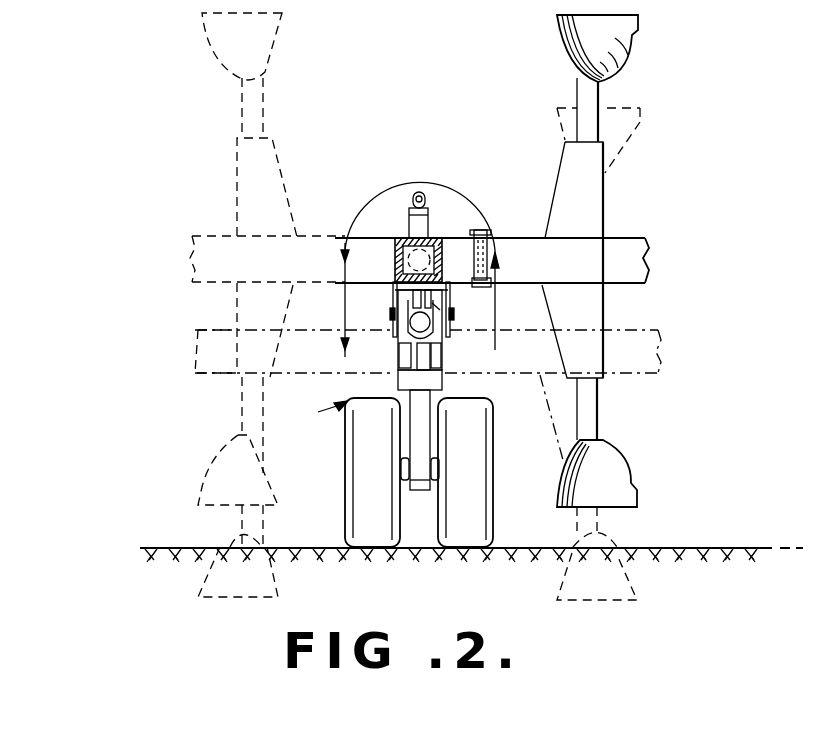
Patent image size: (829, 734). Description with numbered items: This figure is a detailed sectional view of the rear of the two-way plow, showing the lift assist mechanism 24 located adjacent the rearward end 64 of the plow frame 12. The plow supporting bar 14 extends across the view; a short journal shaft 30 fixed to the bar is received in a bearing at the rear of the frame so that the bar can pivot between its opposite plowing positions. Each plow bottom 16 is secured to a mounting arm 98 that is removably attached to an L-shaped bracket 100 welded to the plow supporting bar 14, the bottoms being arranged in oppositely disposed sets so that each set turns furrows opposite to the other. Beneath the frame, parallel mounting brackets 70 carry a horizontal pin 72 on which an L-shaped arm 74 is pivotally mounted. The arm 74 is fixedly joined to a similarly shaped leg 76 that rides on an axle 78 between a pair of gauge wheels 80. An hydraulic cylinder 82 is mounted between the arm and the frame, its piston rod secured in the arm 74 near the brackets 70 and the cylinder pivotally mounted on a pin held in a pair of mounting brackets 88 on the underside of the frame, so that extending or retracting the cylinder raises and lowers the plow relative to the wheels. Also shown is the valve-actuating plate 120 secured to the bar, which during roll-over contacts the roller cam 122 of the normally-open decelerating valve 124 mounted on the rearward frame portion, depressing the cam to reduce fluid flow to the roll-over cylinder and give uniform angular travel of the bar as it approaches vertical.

The plow frame 12 is at (392, 230).
The plow supporting bar 14 is at (589, 272).
The plow bottom 16 is at (627, 53).
The lift assist mechanism 24 is at (316, 419).
The journal shaft 30 is at (372, 250).
The rearward end of the plow frame 64 is at (446, 232).
The mounting brackets 70 is at (393, 293).
The horizontal pin 72 is at (390, 320).
The L-shaped arm 74 is at (402, 381).
The leg 76 is at (420, 489).
The axle 78 is at (438, 458).
The gauge wheels 80 is at (346, 489).
The hydraulic cylinder 82 is at (427, 336).
The mounting brackets 88 is at (452, 318).
The mounting arm 98 is at (592, 100).
The L-shaped bracket 100 is at (598, 197).
The valve-actuating plate 120 is at (488, 237).
The roller cam 122 is at (412, 193).
The decelerating valve 124 is at (430, 207).